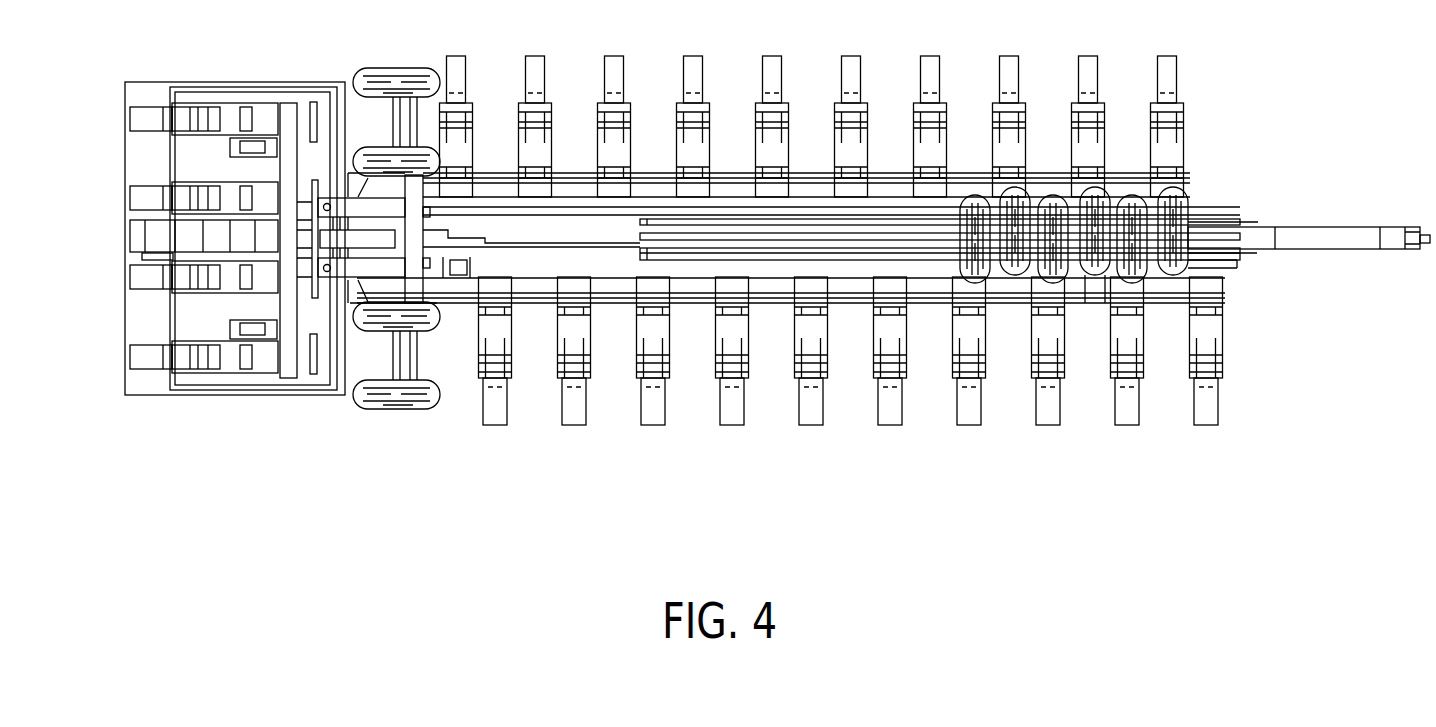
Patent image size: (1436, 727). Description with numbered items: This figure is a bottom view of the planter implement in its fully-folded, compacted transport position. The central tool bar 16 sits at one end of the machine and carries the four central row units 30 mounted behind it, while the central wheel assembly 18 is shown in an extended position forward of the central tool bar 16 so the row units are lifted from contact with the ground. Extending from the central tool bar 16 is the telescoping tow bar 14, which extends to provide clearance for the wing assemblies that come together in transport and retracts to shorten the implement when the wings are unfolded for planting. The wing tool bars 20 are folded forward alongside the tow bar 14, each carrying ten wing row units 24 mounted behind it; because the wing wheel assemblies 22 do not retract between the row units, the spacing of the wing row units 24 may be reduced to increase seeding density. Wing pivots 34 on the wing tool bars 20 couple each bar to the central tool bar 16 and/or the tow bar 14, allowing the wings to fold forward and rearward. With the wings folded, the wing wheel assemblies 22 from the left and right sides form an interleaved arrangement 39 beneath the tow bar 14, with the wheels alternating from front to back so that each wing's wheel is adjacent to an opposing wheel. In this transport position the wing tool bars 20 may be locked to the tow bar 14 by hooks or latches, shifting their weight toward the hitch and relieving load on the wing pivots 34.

The tow bar 14 is at (1258, 240).
The central tool bar 16 is at (207, 260).
The central wheel assembly 18 is at (380, 152).
The wing tool bars 20 is at (845, 205).
The wing wheel assemblies 22 is at (1092, 188).
The wing row units 24 is at (1057, 432).
The central row units 30 is at (120, 278).
The wing pivots 34 is at (326, 203).
The interleaved arrangement 39 is at (1089, 300).